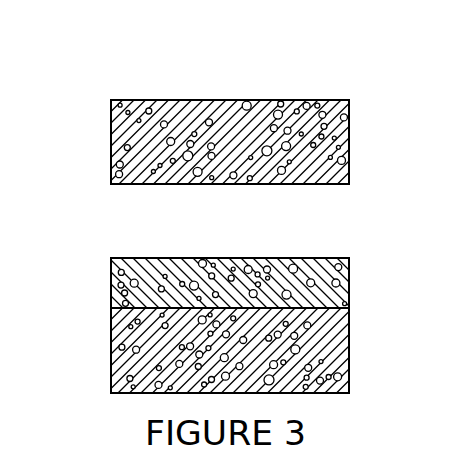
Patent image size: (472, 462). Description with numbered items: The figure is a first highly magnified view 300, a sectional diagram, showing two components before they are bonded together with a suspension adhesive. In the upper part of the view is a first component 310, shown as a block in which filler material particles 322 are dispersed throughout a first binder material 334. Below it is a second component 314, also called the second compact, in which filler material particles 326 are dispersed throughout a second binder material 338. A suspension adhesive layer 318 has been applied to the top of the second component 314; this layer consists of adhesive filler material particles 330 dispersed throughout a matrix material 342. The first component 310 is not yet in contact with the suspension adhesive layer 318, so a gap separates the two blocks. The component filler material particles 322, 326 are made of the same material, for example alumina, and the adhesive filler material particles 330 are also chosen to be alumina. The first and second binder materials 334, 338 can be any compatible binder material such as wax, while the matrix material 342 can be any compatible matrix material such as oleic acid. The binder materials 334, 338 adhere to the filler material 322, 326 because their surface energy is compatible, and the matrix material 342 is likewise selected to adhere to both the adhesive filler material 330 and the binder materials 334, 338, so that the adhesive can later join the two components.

The first highly magnified view 300 is at (122, 90).
The first component 310 is at (349, 100).
The second component 314 is at (349, 315).
The suspension adhesive layer 318 is at (349, 270).
The filler material particles 322 is at (217, 102).
The filler material particles 326 is at (133, 360).
The adhesive filler material particles 330 is at (115, 282).
The first binder material 334 is at (339, 135).
The second binder material 338 is at (343, 363).
The matrix material 342 is at (334, 257).